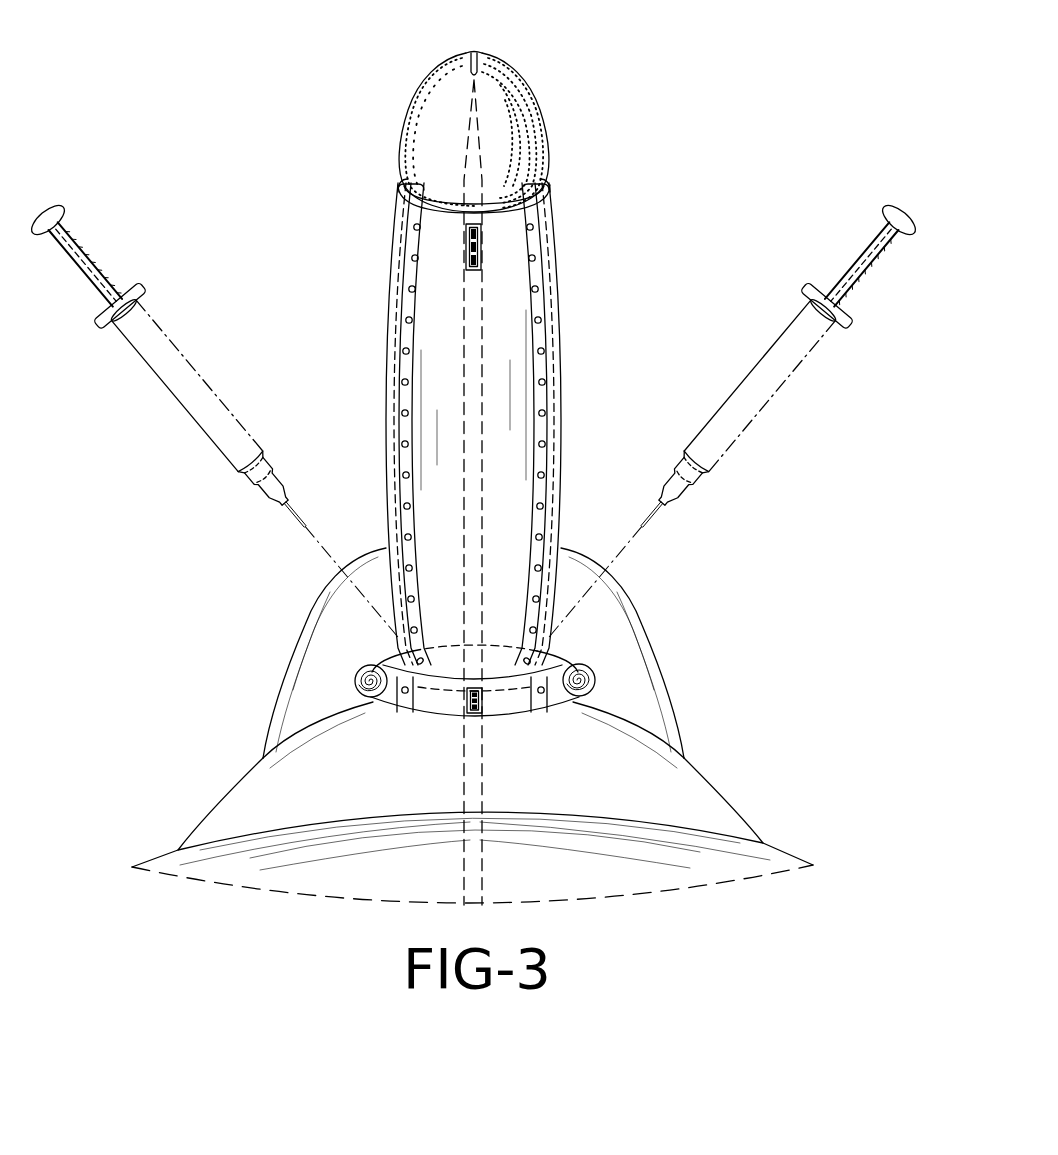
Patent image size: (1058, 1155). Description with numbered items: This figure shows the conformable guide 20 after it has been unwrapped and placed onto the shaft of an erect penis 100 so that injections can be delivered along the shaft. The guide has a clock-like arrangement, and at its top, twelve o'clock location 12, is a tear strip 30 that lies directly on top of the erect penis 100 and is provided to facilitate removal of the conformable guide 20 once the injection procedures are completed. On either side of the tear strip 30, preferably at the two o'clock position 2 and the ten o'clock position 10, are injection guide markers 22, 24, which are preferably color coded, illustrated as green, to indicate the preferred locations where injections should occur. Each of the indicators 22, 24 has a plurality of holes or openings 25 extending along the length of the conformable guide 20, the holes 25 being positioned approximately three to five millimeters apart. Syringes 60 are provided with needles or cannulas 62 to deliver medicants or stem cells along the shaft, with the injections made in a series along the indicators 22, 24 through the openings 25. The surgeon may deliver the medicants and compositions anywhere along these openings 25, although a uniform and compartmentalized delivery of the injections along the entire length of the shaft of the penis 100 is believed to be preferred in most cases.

The penis 100 is at (550, 108).
The tear strip 30 is at (468, 250).
The injection guide marker 22 is at (399, 305).
The injection guide marker 24 is at (544, 272).
The holes 25 is at (545, 382).
The conformable guide 20 is at (610, 666).
The 2 o'clock position 2 is at (401, 713).
The 10 o'clock position 10 is at (551, 711).
The 12 hour position 12 is at (472, 721).
The syringe 60 is at (213, 413).
The needle 62 is at (300, 528).